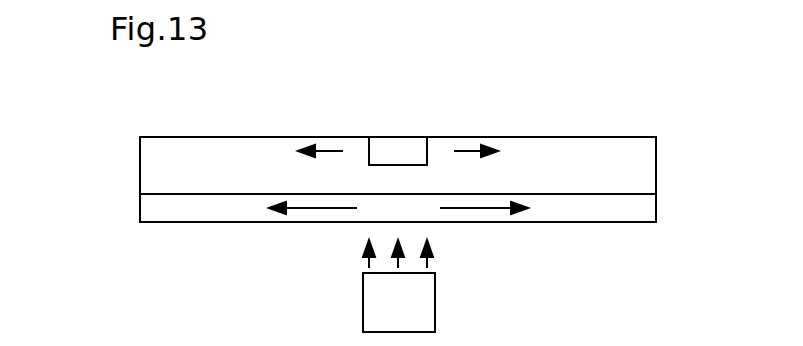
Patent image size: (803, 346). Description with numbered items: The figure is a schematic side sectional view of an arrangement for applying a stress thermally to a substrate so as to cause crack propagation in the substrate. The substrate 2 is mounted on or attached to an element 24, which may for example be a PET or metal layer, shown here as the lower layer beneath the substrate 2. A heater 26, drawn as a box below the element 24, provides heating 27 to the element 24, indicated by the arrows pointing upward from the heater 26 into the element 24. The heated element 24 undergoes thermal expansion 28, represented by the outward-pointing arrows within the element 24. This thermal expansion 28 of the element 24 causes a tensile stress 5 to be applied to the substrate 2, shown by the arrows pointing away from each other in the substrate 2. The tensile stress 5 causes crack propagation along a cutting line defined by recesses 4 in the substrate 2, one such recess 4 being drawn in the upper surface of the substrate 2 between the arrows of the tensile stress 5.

The substrate 2 is at (633, 153).
The recesses 4 is at (408, 152).
The tensile stress 5 is at (330, 152).
The element 24 is at (590, 208).
The heater 26 is at (399, 302).
The heating 27 is at (428, 262).
The thermal expansion 28 is at (315, 208).